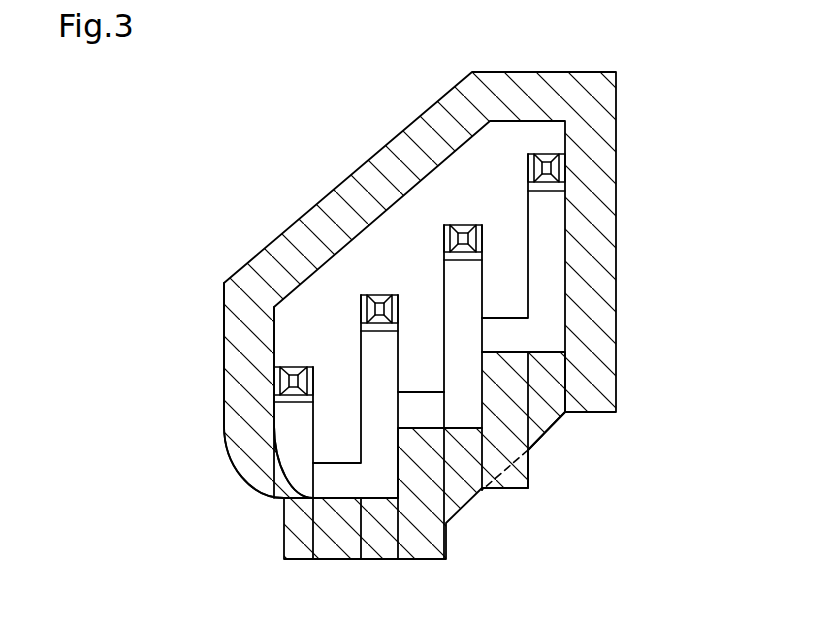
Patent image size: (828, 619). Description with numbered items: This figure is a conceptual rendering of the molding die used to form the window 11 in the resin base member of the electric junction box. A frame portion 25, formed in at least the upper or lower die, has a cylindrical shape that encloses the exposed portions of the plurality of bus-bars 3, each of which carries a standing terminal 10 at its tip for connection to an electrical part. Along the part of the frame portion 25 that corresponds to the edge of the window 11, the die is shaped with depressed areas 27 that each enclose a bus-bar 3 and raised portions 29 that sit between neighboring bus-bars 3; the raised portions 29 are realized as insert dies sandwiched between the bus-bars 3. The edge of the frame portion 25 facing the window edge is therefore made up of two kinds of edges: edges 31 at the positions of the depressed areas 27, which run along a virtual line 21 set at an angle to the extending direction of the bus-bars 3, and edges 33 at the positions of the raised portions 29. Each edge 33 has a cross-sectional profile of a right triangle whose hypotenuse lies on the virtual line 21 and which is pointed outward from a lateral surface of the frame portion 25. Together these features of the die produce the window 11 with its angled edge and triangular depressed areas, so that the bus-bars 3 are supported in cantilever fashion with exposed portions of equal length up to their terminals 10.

The bus-bar 3 is at (457, 283).
The terminal 10 is at (462, 225).
The window 11 is at (617, 200).
The virtual line 21 is at (500, 470).
The frame portion 25 is at (247, 378).
The depressed area 27 is at (547, 365).
The raised portion 29 is at (507, 352).
The edge 31 is at (552, 430).
The edge 33 is at (431, 561).